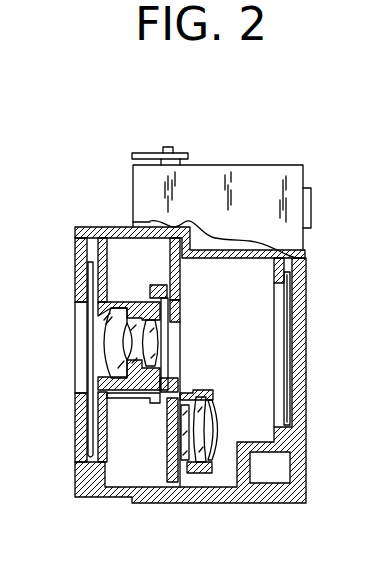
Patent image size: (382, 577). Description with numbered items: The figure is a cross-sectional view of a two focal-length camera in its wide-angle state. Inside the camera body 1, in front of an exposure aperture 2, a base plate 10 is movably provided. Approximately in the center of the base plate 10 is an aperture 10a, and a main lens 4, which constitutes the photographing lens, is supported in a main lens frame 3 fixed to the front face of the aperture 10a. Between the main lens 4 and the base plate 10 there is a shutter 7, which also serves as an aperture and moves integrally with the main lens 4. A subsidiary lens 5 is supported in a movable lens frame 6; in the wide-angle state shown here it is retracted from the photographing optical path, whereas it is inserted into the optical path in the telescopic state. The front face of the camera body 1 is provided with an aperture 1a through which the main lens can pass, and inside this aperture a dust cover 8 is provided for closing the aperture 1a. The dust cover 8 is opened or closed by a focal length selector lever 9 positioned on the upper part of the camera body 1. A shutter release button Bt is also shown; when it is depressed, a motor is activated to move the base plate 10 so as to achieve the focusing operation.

The camera body 1 is at (303, 434).
The aperture 1a is at (75, 383).
The exposure aperture 2 is at (282, 406).
The main lens frame 3 is at (132, 400).
The main lens 4 is at (106, 340).
The subsidiary lens 5 is at (220, 424).
The movable lens frame 6 is at (205, 391).
The shutter 7 is at (181, 375).
The dust cover 8 is at (88, 276).
The focal length selector lever 9 is at (149, 153).
The base plate 10 is at (181, 290).
The aperture 10a is at (181, 320).
The shutter release button Bt is at (173, 148).